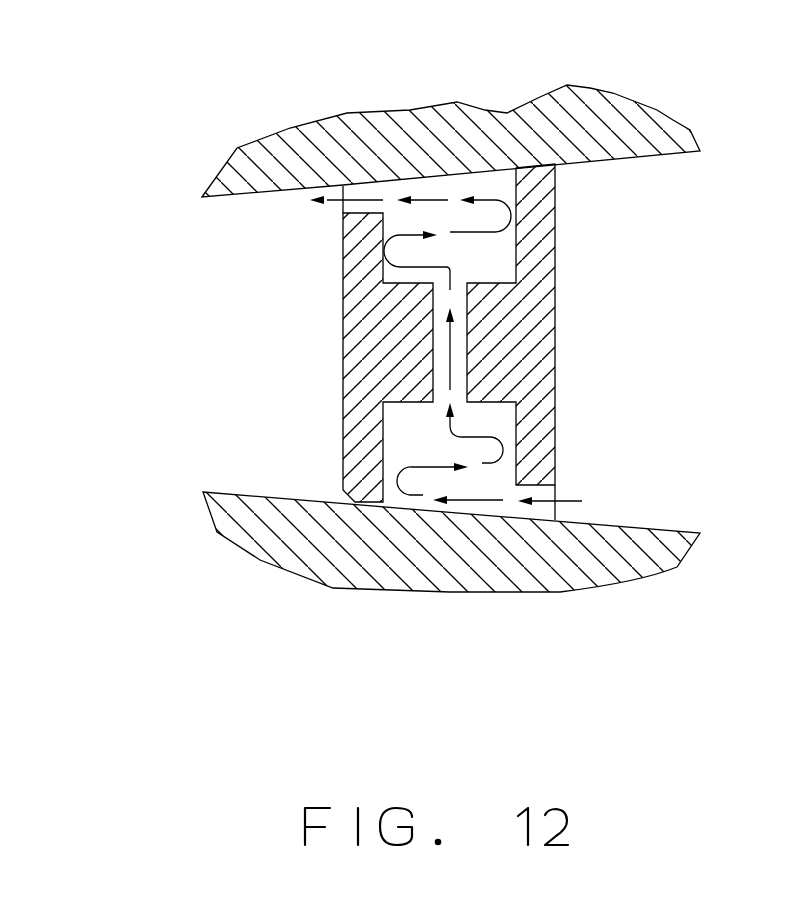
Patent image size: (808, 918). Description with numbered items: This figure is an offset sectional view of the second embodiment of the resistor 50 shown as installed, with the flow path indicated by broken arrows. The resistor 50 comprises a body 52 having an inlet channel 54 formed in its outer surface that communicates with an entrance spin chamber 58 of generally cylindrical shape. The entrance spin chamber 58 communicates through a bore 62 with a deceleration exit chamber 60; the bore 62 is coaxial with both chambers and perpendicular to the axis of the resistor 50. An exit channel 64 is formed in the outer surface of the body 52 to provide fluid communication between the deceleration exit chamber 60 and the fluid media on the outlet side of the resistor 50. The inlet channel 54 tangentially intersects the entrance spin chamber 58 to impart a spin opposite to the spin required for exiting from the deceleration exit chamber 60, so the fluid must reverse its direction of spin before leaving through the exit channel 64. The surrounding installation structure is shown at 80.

The resistor 50 is at (363, 355).
The body 52 is at (540, 362).
The inlet channel 54 is at (538, 510).
The entrance spin chamber 58 is at (432, 482).
The deceleration exit chamber 60 is at (472, 188).
The bore 62 is at (460, 342).
The exit channel 64 is at (367, 190).
The housing wall 80 is at (622, 158).